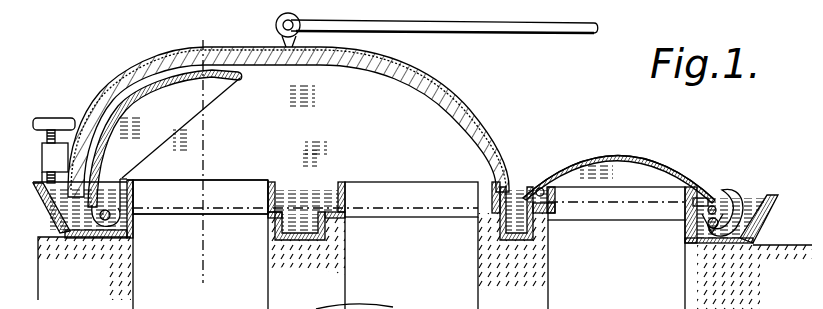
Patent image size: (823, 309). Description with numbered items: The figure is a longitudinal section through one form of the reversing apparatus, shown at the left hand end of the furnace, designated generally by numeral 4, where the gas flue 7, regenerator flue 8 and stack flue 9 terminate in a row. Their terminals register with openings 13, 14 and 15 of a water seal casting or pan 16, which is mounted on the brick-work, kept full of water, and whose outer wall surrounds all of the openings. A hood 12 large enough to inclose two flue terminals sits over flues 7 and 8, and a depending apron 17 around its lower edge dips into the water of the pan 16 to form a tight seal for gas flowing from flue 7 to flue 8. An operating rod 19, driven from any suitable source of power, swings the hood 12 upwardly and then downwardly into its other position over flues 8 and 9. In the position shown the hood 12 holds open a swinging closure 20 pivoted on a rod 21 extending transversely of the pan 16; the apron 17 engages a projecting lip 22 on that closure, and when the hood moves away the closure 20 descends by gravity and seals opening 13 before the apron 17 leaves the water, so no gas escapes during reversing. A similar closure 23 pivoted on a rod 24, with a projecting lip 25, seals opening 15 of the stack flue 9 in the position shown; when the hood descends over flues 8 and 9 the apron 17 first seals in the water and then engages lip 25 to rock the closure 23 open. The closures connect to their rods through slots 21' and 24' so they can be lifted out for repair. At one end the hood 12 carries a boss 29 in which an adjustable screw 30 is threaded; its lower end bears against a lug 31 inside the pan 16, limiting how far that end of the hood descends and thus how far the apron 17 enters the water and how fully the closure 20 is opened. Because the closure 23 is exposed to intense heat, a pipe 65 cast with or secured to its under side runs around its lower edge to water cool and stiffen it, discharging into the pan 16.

The furnace end 4 is at (201, 161).
The gas flue 7 is at (200, 210).
The regenerator flue 8 is at (411, 245).
The stack flue 9 is at (616, 248).
The hood 12 is at (459, 97).
The opening 13 is at (270, 181).
The opening 14 is at (343, 181).
The opening 15 is at (565, 167).
The water seal casting or pan 16 is at (767, 217).
The depending apron 17 is at (97, 184).
The operating rod 19 is at (449, 31).
The swinging closure 20 is at (140, 97).
The rod 21 is at (133, 221).
The slot 21' is at (143, 224).
The projecting lip 22 is at (46, 247).
The closure 23 is at (642, 157).
The rod 24 is at (711, 192).
The slot 24' is at (737, 252).
The projecting lip 25 is at (736, 193).
The boss 29 is at (44, 156).
The adjustable screw 30 is at (62, 118).
The lug 31 is at (62, 202).
The pipe 65 is at (704, 186).